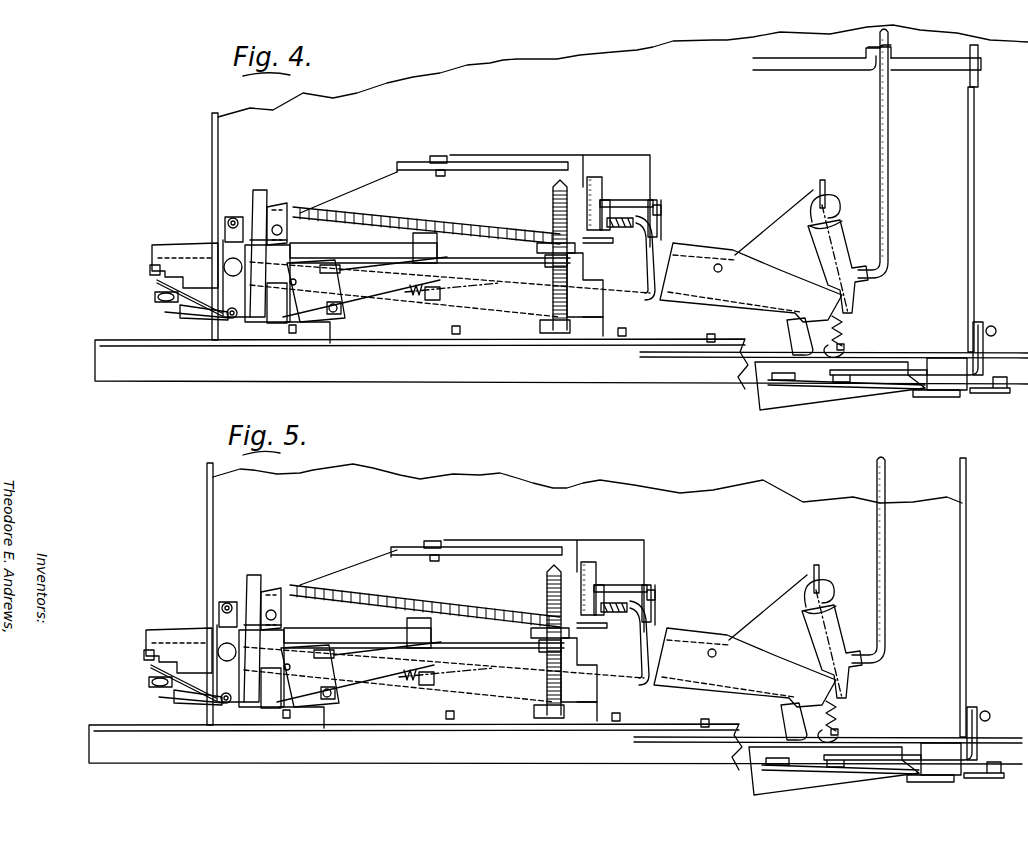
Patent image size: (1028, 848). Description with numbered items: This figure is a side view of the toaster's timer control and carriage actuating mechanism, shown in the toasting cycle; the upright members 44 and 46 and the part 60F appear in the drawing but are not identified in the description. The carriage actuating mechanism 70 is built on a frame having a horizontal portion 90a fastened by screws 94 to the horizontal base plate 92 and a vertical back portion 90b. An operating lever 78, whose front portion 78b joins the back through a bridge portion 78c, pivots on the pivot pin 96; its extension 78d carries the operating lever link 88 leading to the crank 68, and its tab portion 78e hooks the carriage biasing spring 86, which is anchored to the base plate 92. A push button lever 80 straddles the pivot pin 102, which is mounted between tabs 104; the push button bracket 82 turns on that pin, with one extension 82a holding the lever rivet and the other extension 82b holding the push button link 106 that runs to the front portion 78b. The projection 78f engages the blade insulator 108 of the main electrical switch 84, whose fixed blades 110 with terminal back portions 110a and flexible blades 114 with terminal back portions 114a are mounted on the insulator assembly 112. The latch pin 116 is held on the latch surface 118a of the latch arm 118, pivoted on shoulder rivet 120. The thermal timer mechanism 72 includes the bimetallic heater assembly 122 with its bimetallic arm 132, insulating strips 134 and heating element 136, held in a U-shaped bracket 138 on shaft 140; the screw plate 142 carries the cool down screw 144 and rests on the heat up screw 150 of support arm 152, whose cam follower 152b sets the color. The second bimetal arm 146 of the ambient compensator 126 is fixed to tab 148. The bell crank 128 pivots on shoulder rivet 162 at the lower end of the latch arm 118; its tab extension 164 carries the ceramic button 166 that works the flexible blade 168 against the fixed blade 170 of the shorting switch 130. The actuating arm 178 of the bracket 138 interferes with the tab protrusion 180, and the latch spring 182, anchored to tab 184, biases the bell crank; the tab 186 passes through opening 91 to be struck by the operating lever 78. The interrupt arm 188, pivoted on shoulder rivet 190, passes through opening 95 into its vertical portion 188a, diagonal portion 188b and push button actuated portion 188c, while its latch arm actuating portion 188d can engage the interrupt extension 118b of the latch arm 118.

In FIG. 4, the frame rod 44 is at (212, 143).
In FIG. 5, the frame rod 44 is at (583, 597).
In FIG. 4, the housing wall 46 is at (466, 66).
In FIG. 5, the housing wall 46 is at (587, 475).
In FIG. 4, the cross bar 60F is at (781, 58).
In FIG. 4, the crank 68 is at (867, 45).
In FIG. 4, the carriage actuating mechanism 70 is at (738, 182).
In FIG. 5, the carriage actuating mechanism 70 is at (732, 527).
In FIG. 4, the thermal timer mechanism 72 is at (341, 168).
In FIG. 5, the thermal timer mechanism 72 is at (320, 537).
In FIG. 4, the operating lever 78 is at (758, 232).
In FIG. 5, the operating lever 78 is at (745, 641).
In FIG. 4, the front portion 78b is at (738, 310).
In FIG. 5, the front portion 78b is at (705, 698).
In FIG. 4, the bridge portion 78c is at (690, 240).
In FIG. 5, the bridge portion 78c is at (695, 624).
In FIG. 4, the extension 78d is at (880, 273).
In FIG. 5, the extension 78d is at (856, 644).
In FIG. 4, the tab portion 78e is at (822, 180).
In FIG. 5, the tab portion 78e is at (828, 572).
In FIG. 4, the projection 78f is at (797, 332).
In FIG. 5, the projection 78f is at (784, 721).
In FIG. 4, the push button lever 80 is at (592, 177).
In FIG. 5, the push button lever 80 is at (586, 568).
In FIG. 4, the push button bracket 82 is at (640, 200).
In FIG. 5, the push button bracket 82 is at (620, 569).
In FIG. 4, the extension 82a is at (606, 200).
In FIG. 5, the extension 82a is at (608, 558).
In FIG. 4, the extension 82b is at (655, 200).
In FIG. 5, the extension 82b is at (658, 589).
In FIG. 4, the main electrical switch 84 is at (873, 406).
In FIG. 5, the main electrical switch 84 is at (897, 699).
In FIG. 4, the carriage biasing spring 86 is at (838, 198).
In FIG. 5, the carriage biasing spring 86 is at (835, 592).
In FIG. 4, the operating lever link 88 is at (888, 116).
In FIG. 5, the operating lever link 88 is at (883, 560).
In FIG. 4, the horizontal portion 90a is at (582, 346).
In FIG. 5, the horizontal portion 90a is at (400, 741).
In FIG. 4, the vertical back portion 90b is at (640, 155).
In FIG. 5, the vertical back portion 90b is at (658, 540).
In FIG. 4, the opening 91 is at (340, 272).
In FIG. 5, the opening 91 is at (444, 652).
In FIG. 4, the horizontal base plate 92 is at (95, 355).
In FIG. 5, the horizontal base plate 92 is at (542, 747).
In FIG. 4, the screws 94 is at (291, 333).
In FIG. 5, the screws 94 is at (482, 732).
In FIG. 4, the opening 95 is at (598, 330).
In FIG. 5, the opening 95 is at (584, 727).
In FIG. 4, the pivot pin 96 is at (718, 264).
In FIG. 5, the pivot pin 96 is at (718, 635).
In FIG. 4, the pivot pin 102 is at (663, 228).
In FIG. 5, the pivot pin 102 is at (675, 605).
In FIG. 4, the tabs 104 is at (661, 207).
In FIG. 5, the tabs 104 is at (671, 587).
In FIG. 4, the push button link 106 is at (657, 280).
In FIG. 5, the push button link 106 is at (657, 643).
In FIG. 4, the blade insulator 108 is at (780, 382).
In FIG. 5, the blade insulator 108 is at (818, 772).
In FIG. 4, the fixed blades 110 is at (868, 370).
In FIG. 5, the fixed blades 110 is at (898, 736).
In FIG. 4, the back portions 110a is at (980, 322).
In FIG. 5, the back portions 110a is at (995, 718).
In FIG. 4, the insulator assembly 112 is at (945, 397).
In FIG. 5, the insulator assembly 112 is at (934, 772).
In FIG. 4, the flexible blades 114 is at (820, 388).
In FIG. 5, the flexible blades 114 is at (840, 783).
In FIG. 4, the back portions 114a is at (997, 393).
In FIG. 5, the back portions 114a is at (986, 782).
In FIG. 4, the latch pin 116 is at (233, 217).
In FIG. 5, the latch pin 116 is at (222, 590).
In FIG. 4, the latch arm 118 is at (243, 189).
In FIG. 5, the latch arm 118 is at (253, 625).
In FIG. 4, the latch surface 118a is at (227, 221).
In FIG. 5, the latch surface 118a is at (198, 608).
In FIG. 4, the interrupt extension 118b is at (160, 245).
In FIG. 5, the interrupt extension 118b is at (159, 636).
In FIG. 4, the shoulder rivet 120 is at (225, 262).
In FIG. 5, the shoulder rivet 120 is at (221, 655).
In FIG. 4, the bimetallic heater assembly 122 is at (390, 204).
In FIG. 5, the bimetallic heater assembly 122 is at (425, 588).
In FIG. 4, the ambient compensator 126 is at (490, 146).
In FIG. 5, the ambient compensator 126 is at (544, 572).
In FIG. 4, the bell crank 128 is at (332, 328).
In FIG. 5, the bell crank 128 is at (223, 728).
In FIG. 4, the shorting switch 130 is at (94, 322).
In FIG. 5, the shorting switch 130 is at (82, 699).
In FIG. 4, the bimetallic arm 132 is at (540, 236).
In FIG. 5, the bimetallic arm 132 is at (515, 603).
In FIG. 4, the insulating strips 134 is at (470, 230).
In FIG. 5, the insulating strips 134 is at (465, 589).
In FIG. 4, the heating element 136 is at (420, 225).
In FIG. 5, the heating element 136 is at (393, 578).
In FIG. 4, the U-shaped bracket 138 is at (278, 206).
In FIG. 5, the U-shaped bracket 138 is at (277, 594).
In FIG. 4, the shaft 140 is at (283, 231).
In FIG. 5, the shaft 140 is at (289, 612).
In FIG. 4, the screw plate 142 is at (537, 247).
In FIG. 5, the screw plate 142 is at (523, 634).
In FIG. 4, the cool down screw 144 is at (553, 200).
In FIG. 5, the cool down screw 144 is at (535, 641).
In FIG. 4, the second bimetal arm 146 is at (532, 163).
In FIG. 5, the second bimetal arm 146 is at (476, 539).
In FIG. 4, the tab 148 is at (430, 160).
In FIG. 5, the tab 148 is at (411, 541).
In FIG. 4, the heat up screw 150 is at (548, 333).
In FIG. 5, the heat up screw 150 is at (539, 696).
In FIG. 4, the support arm 152 is at (357, 247).
In FIG. 5, the support arm 152 is at (424, 632).
In FIG. 4, the cam follower 152b is at (427, 245).
In FIG. 5, the cam follower 152b is at (435, 629).
In FIG. 4, the shoulder rivet 162 is at (230, 318).
In FIG. 5, the shoulder rivet 162 is at (209, 722).
In FIG. 4, the tab extension 164 is at (156, 298).
In FIG. 5, the tab extension 164 is at (136, 686).
In FIG. 4, the ceramic button 166 is at (182, 312).
In FIG. 5, the ceramic button 166 is at (160, 700).
In FIG. 4, the flexible blade 168 is at (157, 282).
In FIG. 5, the flexible blade 168 is at (159, 678).
In FIG. 4, the fixed blade 170 is at (190, 318).
In FIG. 5, the fixed blade 170 is at (190, 721).
In FIG. 4, the actuating arm 178 is at (258, 308).
In FIG. 5, the actuating arm 178 is at (266, 688).
In FIG. 4, the tab protrusion 180 is at (268, 316).
In FIG. 5, the tab protrusion 180 is at (254, 707).
In FIG. 4, the latch spring 182 is at (350, 315).
In FIG. 5, the latch spring 182 is at (330, 719).
In FIG. 4, the tab 184 is at (424, 300).
In FIG. 5, the tab 184 is at (415, 691).
In FIG. 4, the tab 186 is at (330, 265).
In FIG. 5, the tab 186 is at (325, 627).
In FIG. 4, the interrupt arm 188 is at (590, 300).
In FIG. 5, the interrupt arm 188 is at (590, 670).
In FIG. 4, the vertical portion 188a is at (580, 272).
In FIG. 5, the vertical portion 188a is at (605, 659).
In FIG. 4, the diagonal portion 188b is at (590, 258).
In FIG. 5, the diagonal portion 188b is at (610, 646).
In FIG. 4, the push button actuated portion 188c is at (598, 246).
In FIG. 5, the push button actuated portion 188c is at (606, 632).
In FIG. 4, the latch arm actuating portion 188d is at (150, 268).
In FIG. 5, the latch arm actuating portion 188d is at (122, 647).
In FIG. 4, the shoulder rivet 190 is at (294, 285).
In FIG. 5, the shoulder rivet 190 is at (307, 676).